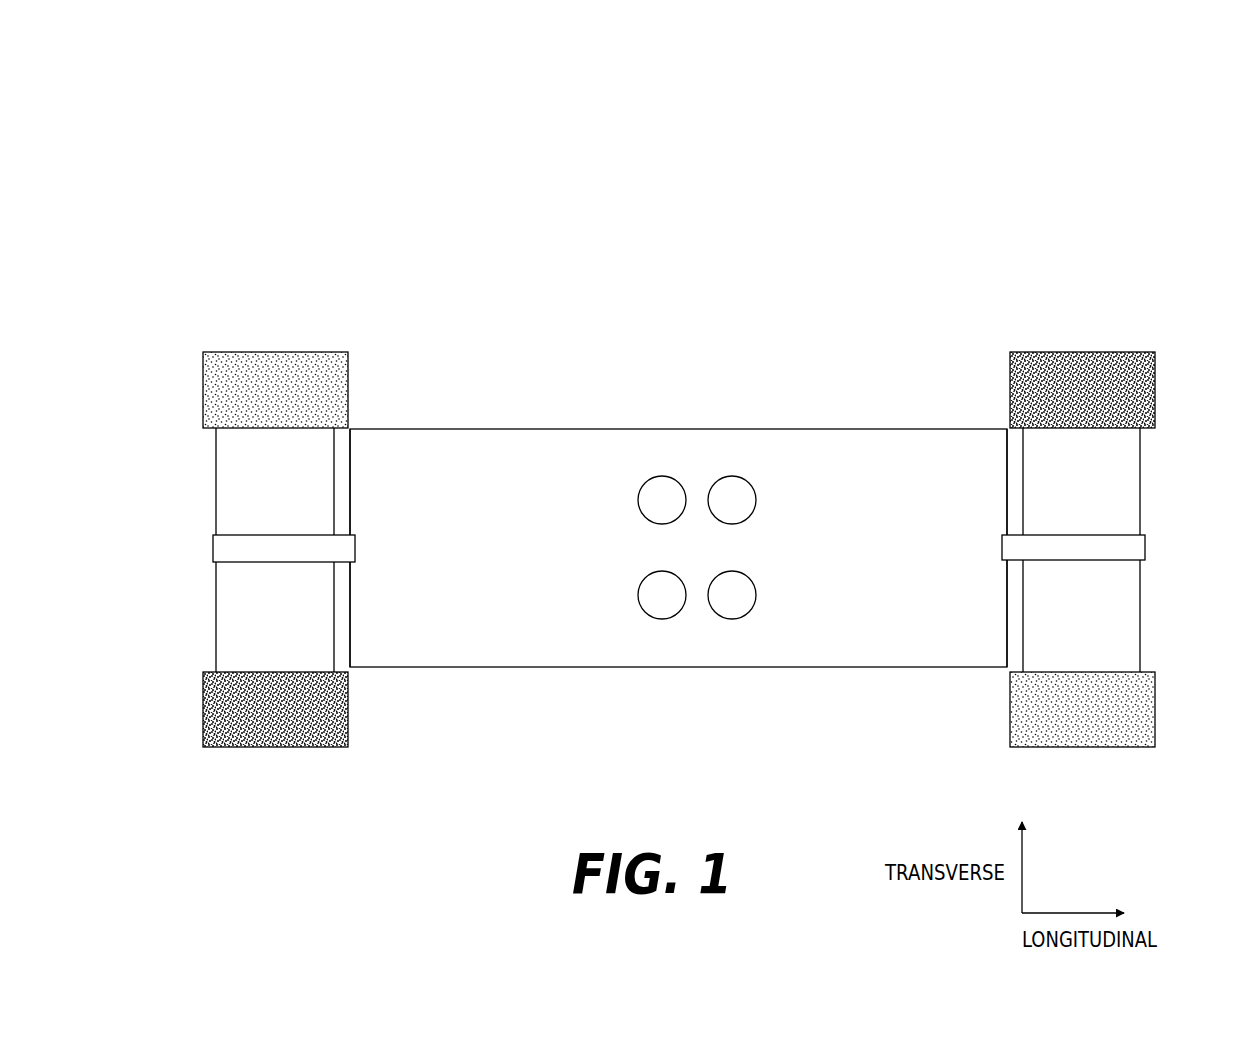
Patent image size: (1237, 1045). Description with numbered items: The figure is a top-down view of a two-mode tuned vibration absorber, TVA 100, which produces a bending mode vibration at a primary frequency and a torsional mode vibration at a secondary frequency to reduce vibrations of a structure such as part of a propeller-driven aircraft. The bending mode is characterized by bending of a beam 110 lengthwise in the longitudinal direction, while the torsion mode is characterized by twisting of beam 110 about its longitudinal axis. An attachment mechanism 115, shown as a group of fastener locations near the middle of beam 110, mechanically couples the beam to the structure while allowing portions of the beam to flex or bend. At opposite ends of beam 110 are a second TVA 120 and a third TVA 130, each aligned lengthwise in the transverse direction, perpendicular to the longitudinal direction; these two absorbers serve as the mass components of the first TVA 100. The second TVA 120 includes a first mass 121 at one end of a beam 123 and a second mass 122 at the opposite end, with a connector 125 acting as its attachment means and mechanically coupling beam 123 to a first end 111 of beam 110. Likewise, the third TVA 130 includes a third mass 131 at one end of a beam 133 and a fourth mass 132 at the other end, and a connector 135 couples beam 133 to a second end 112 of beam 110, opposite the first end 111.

The two-mode tuned vibration absorber 100 is at (192, 134).
The beam 110 is at (577, 463).
The first end 111 is at (375, 404).
The second end 112 is at (949, 420).
The attachment mechanism 115 is at (731, 493).
The second TVA 120 is at (304, 272).
The first mass 121 is at (257, 385).
The second mass 122 is at (237, 717).
The beam 123 is at (237, 509).
The connector 125 is at (237, 547).
The third TVA 130 is at (1067, 281).
The third mass 131 is at (1143, 711).
The fourth mass 132 is at (1143, 388).
The beam 133 is at (1132, 503).
The connector 135 is at (1132, 548).